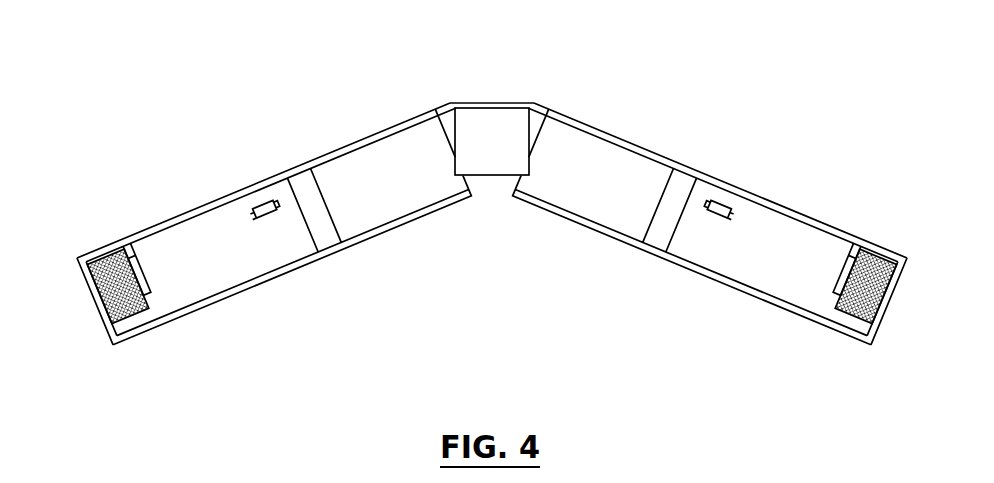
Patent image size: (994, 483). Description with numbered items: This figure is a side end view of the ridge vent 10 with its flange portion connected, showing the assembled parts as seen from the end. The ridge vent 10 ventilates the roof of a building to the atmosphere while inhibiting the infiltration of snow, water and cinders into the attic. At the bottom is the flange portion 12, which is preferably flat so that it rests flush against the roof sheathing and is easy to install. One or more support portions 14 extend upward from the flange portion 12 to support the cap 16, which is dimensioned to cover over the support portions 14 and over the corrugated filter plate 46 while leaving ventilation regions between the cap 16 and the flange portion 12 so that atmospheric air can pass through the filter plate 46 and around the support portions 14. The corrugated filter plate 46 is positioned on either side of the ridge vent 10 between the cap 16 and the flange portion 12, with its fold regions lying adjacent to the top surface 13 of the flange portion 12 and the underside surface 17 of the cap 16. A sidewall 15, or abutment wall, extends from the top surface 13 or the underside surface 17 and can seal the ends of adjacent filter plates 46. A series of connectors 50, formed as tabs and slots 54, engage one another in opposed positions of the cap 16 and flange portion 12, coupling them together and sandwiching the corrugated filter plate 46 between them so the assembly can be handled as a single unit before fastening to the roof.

The ridge vent 10 is at (472, 221).
The flange portion 12 is at (292, 273).
The top surface 13 is at (182, 298).
The support portion 14 is at (212, 262).
The sidewall 15 is at (98, 321).
The cap 16 is at (640, 148).
The underside surface 17 is at (176, 232).
The corrugated filter plate 46 is at (115, 266).
The connectors 50 is at (472, 221).
The slots 54 is at (254, 217).